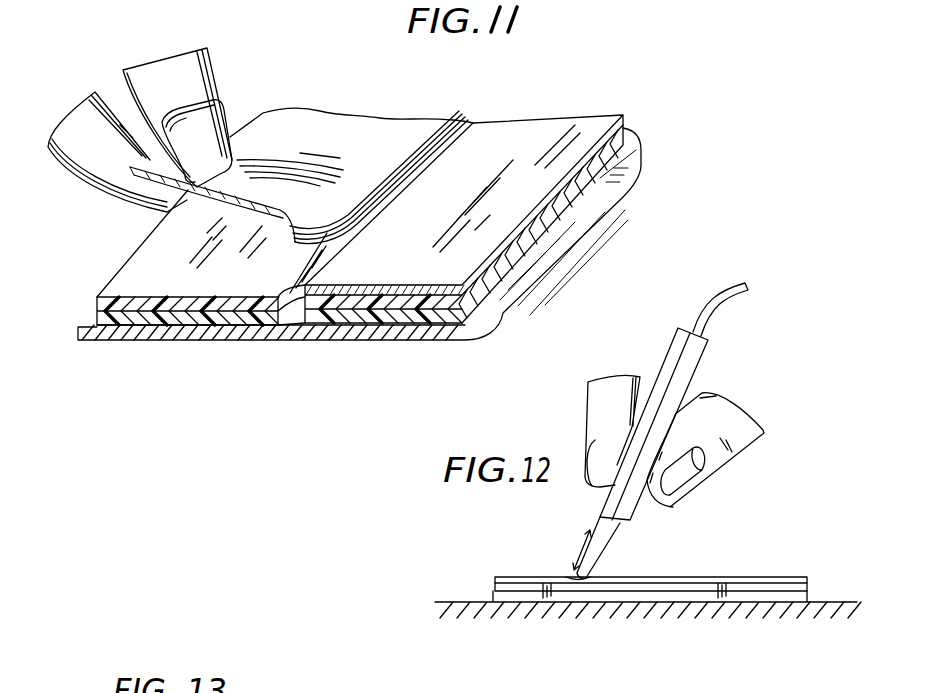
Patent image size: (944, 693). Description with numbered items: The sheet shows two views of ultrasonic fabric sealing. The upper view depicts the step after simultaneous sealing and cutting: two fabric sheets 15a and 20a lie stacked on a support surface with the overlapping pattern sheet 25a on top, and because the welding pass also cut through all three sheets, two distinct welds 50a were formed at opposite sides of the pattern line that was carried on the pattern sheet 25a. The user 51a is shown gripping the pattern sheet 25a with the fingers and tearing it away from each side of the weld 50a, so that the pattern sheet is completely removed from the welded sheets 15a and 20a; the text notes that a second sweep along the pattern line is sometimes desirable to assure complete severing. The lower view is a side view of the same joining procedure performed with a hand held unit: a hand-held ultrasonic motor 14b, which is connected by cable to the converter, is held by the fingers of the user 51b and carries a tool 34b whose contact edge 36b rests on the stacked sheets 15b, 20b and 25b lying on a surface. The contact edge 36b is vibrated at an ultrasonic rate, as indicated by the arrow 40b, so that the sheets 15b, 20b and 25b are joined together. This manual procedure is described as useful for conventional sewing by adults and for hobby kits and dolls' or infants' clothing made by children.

In FIG. 11, the sheet 15a is at (108, 325).
In FIG. 11, the sheet 20a is at (107, 302).
In FIG. 11, the pattern sheet 25a is at (383, 137).
In FIG. 11, the weld 50a is at (277, 327).
In FIG. 11, the user 51a is at (203, 63).
In FIG. 12, the hand-held ultrasonic motor 14b is at (700, 360).
In FIG. 12, the sheet 15b is at (790, 598).
In FIG. 12, the sheet 20b is at (807, 587).
In FIG. 12, the sheet 25b is at (812, 558).
In FIG. 12, the tool 34b is at (607, 548).
In FIG. 12, the contact edge 36b is at (580, 578).
In FIG. 12, the arrow 40b is at (576, 559).
In FIG. 12, the user 51b is at (600, 410).